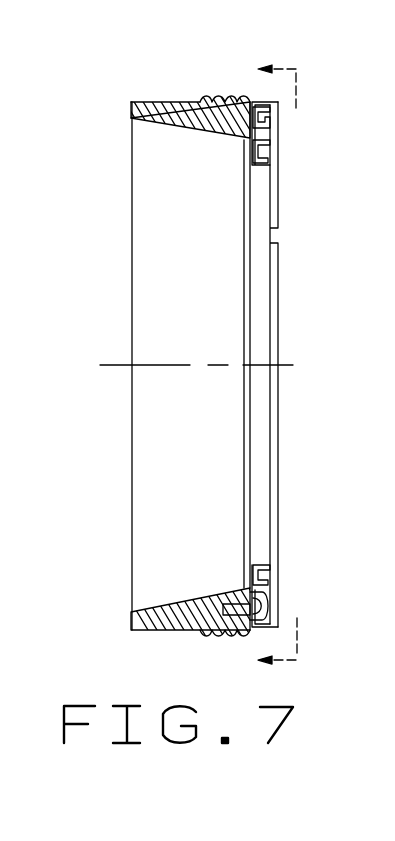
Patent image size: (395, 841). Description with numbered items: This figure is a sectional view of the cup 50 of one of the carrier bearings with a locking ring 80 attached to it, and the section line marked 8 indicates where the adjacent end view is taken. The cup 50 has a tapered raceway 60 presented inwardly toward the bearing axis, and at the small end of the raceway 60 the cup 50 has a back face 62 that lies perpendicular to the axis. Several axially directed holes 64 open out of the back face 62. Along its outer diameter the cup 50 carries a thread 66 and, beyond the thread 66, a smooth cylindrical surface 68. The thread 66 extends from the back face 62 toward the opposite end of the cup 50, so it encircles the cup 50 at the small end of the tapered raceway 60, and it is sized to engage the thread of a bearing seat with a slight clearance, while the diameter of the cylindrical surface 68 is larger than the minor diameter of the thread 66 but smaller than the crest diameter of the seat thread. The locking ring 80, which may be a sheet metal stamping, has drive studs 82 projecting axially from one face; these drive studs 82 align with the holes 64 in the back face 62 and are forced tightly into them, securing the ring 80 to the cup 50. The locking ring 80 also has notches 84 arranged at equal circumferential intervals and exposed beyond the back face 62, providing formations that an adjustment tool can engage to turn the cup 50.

The cup 50 is at (125, 489).
The tapered raceway 60 is at (168, 248).
The back face 62 is at (252, 137).
The axially directed holes 64 is at (243, 590).
The thread 66 is at (223, 97).
The cylindrical surface 68 is at (166, 102).
The locking ring 80 is at (272, 188).
The drive studs 82 is at (228, 605).
The notches 84 is at (268, 576).
The section line 8- 8 is at (266, 366).